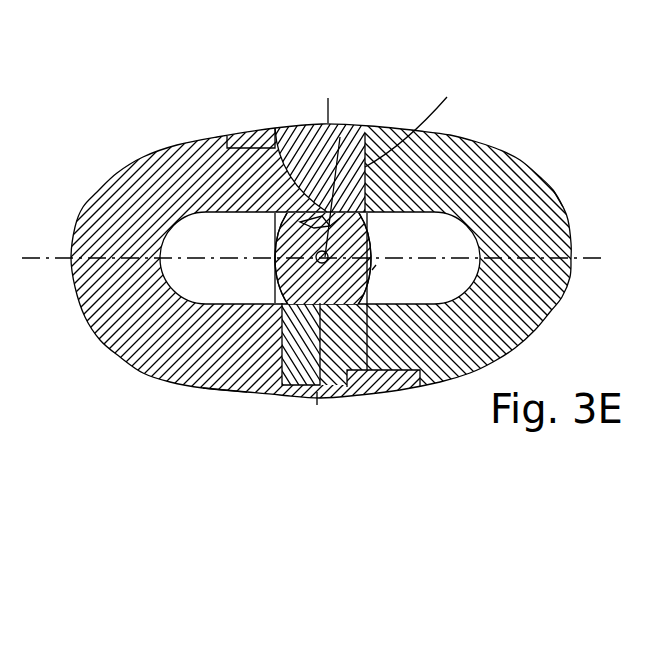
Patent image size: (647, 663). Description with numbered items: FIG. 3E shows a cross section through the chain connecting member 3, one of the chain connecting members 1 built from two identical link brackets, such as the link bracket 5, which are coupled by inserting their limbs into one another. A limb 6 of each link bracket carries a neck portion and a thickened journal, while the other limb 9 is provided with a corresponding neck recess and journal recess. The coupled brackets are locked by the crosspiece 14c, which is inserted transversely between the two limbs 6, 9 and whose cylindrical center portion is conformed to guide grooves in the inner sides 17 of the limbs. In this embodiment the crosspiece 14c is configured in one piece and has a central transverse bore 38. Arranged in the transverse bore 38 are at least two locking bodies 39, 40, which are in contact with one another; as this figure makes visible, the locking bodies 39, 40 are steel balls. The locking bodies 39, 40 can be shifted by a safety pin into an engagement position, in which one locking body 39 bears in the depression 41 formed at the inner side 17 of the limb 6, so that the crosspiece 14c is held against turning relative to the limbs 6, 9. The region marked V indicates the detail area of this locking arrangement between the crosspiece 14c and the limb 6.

The chain connecting member 1 is at (640, 217).
The chain connecting member 3 is at (527, 113).
The link bracket 5 is at (113, 172).
The limb 6 is at (412, 119).
The limb 9 is at (229, 391).
The crosspiece 14c is at (274, 251).
The inner side 17 is at (231, 213).
The central transverse bore 38 is at (332, 217).
The locking body 39 is at (275, 128).
The locking body 40 is at (318, 217).
The depression 41 is at (340, 137).
The gap V is at (375, 270).